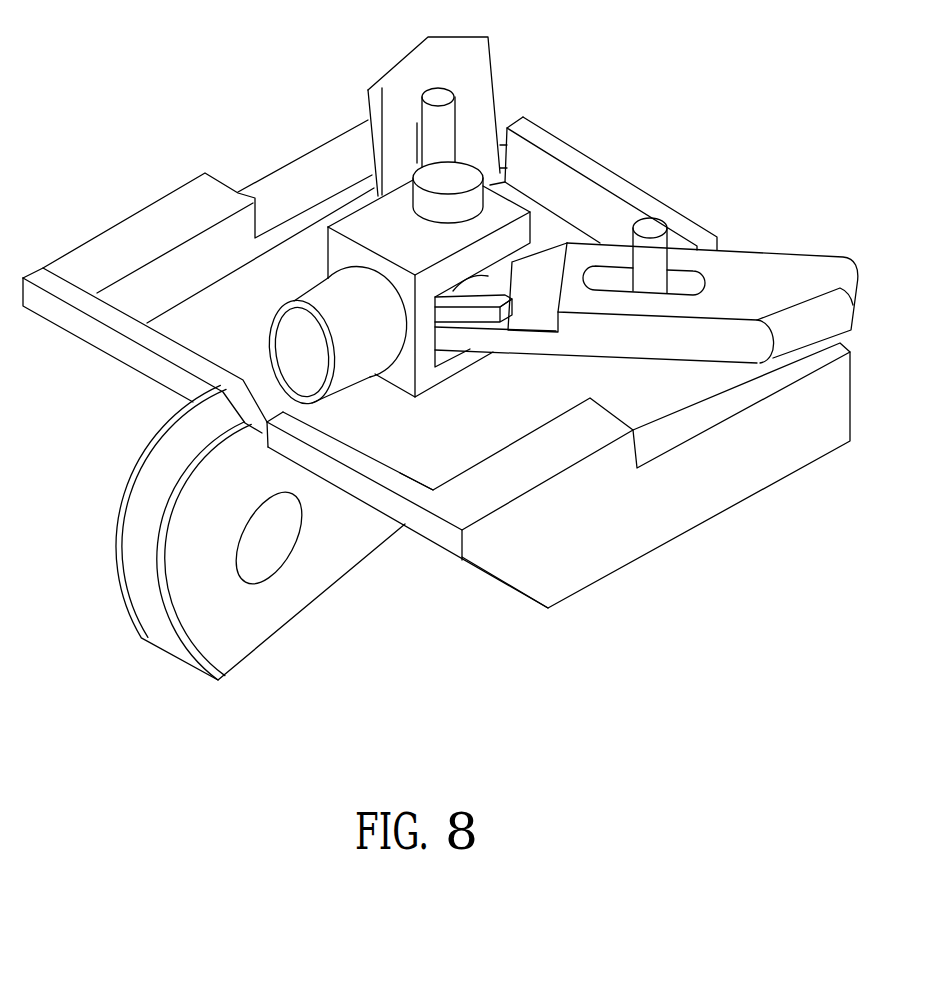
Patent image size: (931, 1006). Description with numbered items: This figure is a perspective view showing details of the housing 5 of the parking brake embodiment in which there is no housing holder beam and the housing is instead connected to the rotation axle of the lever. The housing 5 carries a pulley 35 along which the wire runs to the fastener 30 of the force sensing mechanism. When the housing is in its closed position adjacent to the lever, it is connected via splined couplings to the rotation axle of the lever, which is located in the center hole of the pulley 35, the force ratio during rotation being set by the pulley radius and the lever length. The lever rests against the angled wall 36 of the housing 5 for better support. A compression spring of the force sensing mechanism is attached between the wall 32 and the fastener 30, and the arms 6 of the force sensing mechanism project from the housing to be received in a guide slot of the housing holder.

The housing 5 is at (659, 552).
The arms 6 is at (477, 67).
The fastener 30 is at (323, 300).
The wall 32 is at (400, 473).
The pulley 35 is at (232, 615).
The angled wall 36 is at (488, 575).